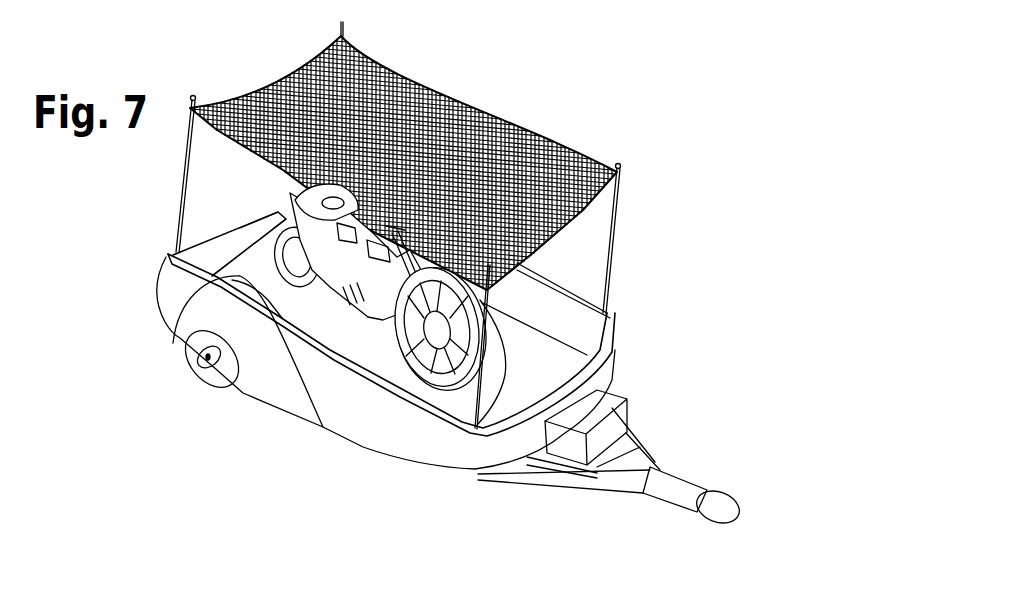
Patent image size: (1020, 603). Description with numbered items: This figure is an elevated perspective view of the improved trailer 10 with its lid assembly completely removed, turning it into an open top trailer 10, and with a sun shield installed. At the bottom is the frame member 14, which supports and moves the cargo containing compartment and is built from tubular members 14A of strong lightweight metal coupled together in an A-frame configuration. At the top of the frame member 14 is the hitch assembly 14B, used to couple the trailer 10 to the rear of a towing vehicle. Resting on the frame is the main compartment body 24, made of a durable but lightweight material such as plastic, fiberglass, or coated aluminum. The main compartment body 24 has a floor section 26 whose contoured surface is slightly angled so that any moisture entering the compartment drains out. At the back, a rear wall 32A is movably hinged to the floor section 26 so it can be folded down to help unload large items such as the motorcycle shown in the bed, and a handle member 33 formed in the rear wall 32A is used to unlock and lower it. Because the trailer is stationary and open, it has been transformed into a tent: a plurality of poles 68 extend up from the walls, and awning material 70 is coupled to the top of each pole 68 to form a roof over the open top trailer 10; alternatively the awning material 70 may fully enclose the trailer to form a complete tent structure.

The improved trailer 10 is at (737, 183).
The frame member 14 is at (688, 417).
The tubular members 14A is at (575, 483).
The hitch assembly 14B is at (722, 505).
The main compartment body 24 is at (347, 447).
The floor section 26 is at (553, 367).
The rear wall 32A is at (260, 223).
The handle member 33 is at (240, 240).
The poles 68 is at (185, 166).
The awning material 70 is at (473, 110).